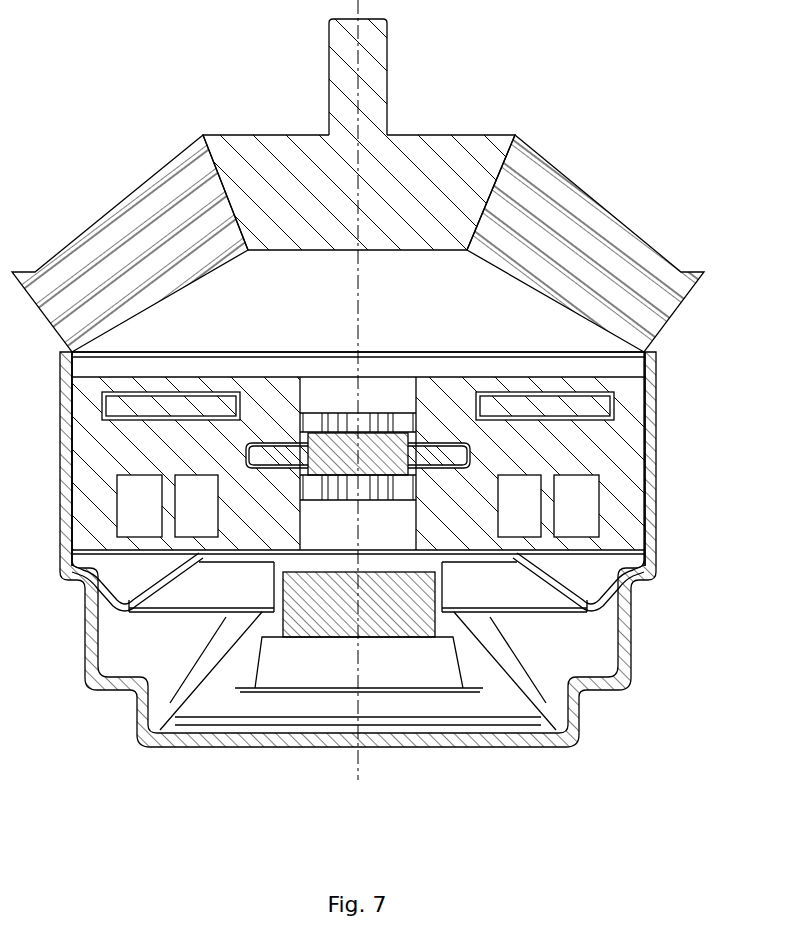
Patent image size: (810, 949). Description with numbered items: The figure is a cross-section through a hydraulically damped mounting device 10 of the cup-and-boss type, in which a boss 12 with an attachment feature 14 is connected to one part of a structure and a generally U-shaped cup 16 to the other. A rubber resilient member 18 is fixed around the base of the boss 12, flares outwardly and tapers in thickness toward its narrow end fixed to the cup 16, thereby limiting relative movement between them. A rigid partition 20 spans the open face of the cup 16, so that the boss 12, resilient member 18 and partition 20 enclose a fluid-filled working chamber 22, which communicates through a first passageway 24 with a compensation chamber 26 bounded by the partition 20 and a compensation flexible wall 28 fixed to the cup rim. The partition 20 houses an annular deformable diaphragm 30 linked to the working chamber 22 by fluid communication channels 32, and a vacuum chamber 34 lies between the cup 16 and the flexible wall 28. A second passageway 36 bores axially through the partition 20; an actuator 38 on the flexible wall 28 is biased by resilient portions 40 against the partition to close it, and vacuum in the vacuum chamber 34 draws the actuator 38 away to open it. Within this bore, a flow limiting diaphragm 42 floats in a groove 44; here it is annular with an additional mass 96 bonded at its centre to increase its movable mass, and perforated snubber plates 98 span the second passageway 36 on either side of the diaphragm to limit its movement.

The hydraulically damped mounting device 10 is at (545, 107).
The boss 12 is at (420, 148).
The attachment feature 14 is at (382, 83).
The cup 16 is at (572, 732).
The resilient member 18 is at (580, 213).
The partition 20 is at (630, 468).
The working chamber 22 is at (330, 316).
The first passageway 24 is at (155, 513).
The compensation chamber 26 is at (593, 565).
The compensation flexible wall 28 is at (590, 604).
The annular deformable diaphragm 30 is at (596, 404).
The fluid communication channels 32 is at (572, 392).
The vacuum chamber 34 is at (412, 677).
The second passageway 36 is at (395, 409).
The actuator 38 is at (323, 627).
The resilient portions 40 is at (175, 702).
The flow limiting diaphragm 42 is at (283, 458).
The groove 44 is at (428, 462).
The additional mass 96 is at (335, 445).
The perforated snubber plates 98 is at (370, 492).